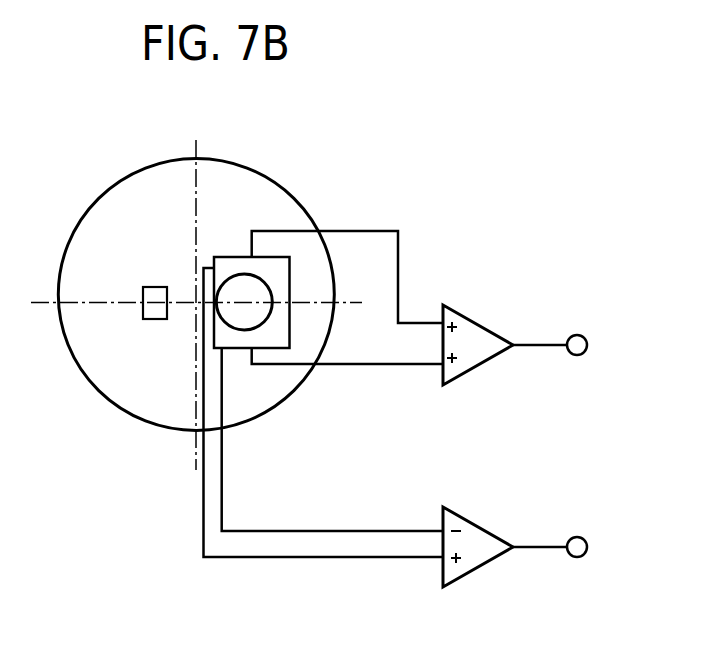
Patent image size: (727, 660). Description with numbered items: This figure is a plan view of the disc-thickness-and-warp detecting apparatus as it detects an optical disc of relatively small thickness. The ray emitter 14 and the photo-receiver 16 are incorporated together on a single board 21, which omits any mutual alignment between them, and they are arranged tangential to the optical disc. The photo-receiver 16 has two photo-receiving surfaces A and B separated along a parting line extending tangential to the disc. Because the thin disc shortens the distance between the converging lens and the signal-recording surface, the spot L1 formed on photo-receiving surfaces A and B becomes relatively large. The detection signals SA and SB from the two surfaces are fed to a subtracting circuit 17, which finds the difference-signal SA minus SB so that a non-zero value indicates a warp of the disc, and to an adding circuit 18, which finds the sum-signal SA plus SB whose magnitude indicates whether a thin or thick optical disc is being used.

The ray emitter 14 is at (153, 319).
The photo-receiver 16 is at (231, 331).
The subtracting circuit 17 is at (484, 522).
The adding circuit 18 is at (484, 322).
The single board 21 is at (299, 385).
The spot L1 is at (227, 289).